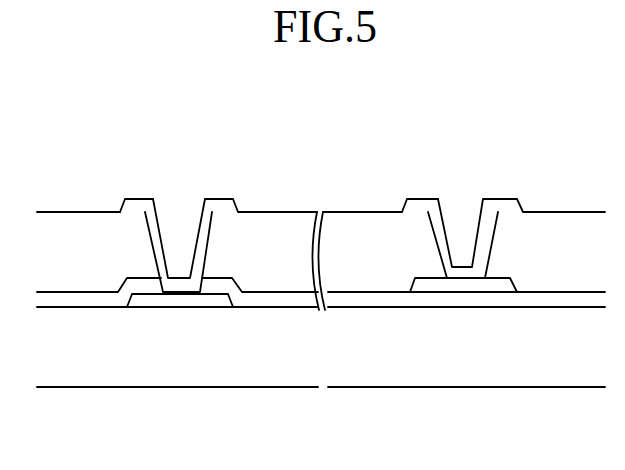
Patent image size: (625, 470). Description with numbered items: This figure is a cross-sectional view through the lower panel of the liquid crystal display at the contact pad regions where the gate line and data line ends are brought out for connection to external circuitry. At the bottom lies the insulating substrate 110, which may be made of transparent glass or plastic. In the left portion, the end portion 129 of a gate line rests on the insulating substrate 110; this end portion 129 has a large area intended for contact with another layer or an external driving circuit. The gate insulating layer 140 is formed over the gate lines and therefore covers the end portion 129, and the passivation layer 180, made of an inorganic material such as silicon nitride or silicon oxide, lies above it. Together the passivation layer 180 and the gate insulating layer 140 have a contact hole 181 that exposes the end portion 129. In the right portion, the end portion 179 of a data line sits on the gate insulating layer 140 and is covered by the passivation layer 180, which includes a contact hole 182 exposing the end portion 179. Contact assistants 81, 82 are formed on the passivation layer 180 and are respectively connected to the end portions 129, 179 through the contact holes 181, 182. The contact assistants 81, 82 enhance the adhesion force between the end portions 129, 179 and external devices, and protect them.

The insulating substrate 110 is at (262, 365).
The end portion 129 is at (178, 300).
The gate insulating layer 140 is at (77, 298).
The end portion 179 is at (459, 285).
The passivation layer 180 is at (71, 240).
The contact assistant 81 is at (137, 208).
The contact assistant 82 is at (418, 205).
The contact hole 181 is at (152, 245).
The contact hole 182 is at (438, 243).